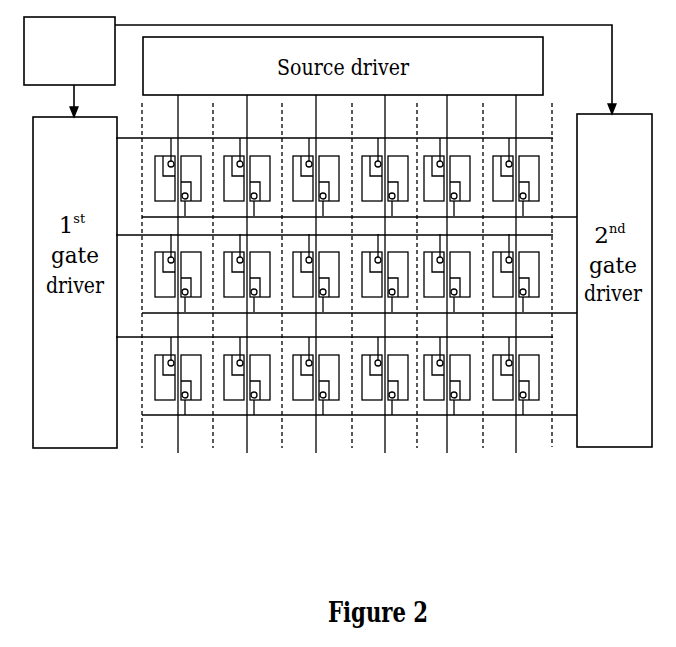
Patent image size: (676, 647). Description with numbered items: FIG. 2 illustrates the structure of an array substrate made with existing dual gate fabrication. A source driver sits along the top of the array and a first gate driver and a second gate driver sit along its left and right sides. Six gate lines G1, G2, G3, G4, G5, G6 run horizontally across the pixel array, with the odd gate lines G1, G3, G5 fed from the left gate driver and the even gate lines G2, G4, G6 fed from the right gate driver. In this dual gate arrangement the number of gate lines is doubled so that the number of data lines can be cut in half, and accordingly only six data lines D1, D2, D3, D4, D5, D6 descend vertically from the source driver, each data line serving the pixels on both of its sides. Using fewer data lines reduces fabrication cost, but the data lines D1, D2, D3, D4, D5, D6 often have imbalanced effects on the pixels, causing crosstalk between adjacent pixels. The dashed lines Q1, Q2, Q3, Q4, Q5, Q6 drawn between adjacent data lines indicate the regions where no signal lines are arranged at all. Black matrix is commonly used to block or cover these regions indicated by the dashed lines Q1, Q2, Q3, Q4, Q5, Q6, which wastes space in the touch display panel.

The gate line G1 is at (334, 130).
The gate line G2 is at (359, 207).
The gate line G3 is at (334, 226).
The gate line G4 is at (359, 304).
The gate line G5 is at (334, 328).
The gate line G6 is at (359, 406).
The dashed line Q1 is at (141, 291).
The dashed line Q2 is at (213, 291).
The dashed line Q3 is at (282, 291).
The dashed line Q4 is at (353, 291).
The dashed line Q5 is at (418, 291).
The dashed line Q6 is at (485, 291).
The data line D1 is at (178, 287).
The data line D2 is at (247, 287).
The data line D3 is at (316, 287).
The data line D4 is at (385, 287).
The data line D5 is at (447, 287).
The data line D6 is at (516, 287).